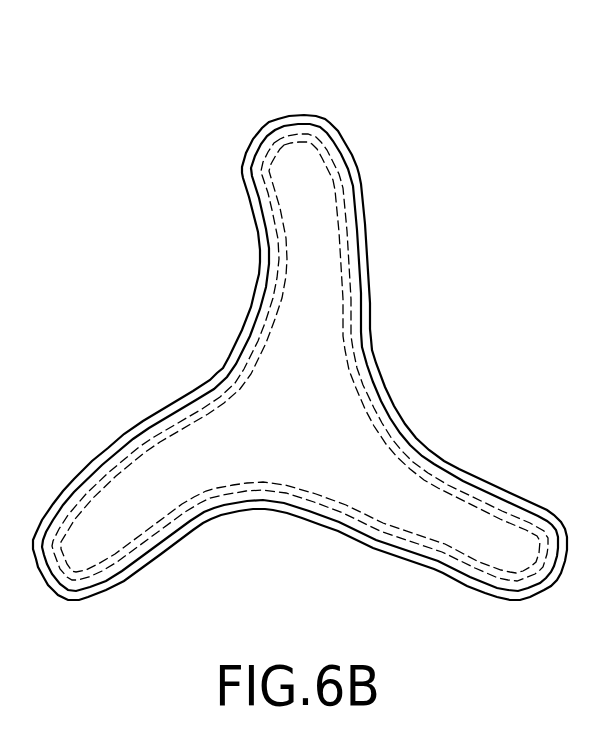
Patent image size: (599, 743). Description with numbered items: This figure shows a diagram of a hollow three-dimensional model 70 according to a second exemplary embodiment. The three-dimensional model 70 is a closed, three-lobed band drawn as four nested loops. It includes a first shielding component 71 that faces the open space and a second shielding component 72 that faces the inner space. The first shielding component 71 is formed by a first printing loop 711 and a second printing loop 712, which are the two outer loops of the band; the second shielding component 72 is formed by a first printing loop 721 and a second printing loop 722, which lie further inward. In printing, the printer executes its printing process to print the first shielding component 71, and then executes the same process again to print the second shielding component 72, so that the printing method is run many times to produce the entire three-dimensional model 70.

The 3D model 70 is at (308, 80).
The first shielding component 71 is at (300, 357).
The first printing loop 711 is at (356, 231).
The second printing loop 712 is at (354, 174).
The second shielding component 72 is at (300, 357).
The first printing loop 721 is at (371, 402).
The second printing loop 722 is at (383, 436).